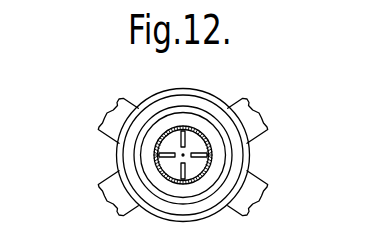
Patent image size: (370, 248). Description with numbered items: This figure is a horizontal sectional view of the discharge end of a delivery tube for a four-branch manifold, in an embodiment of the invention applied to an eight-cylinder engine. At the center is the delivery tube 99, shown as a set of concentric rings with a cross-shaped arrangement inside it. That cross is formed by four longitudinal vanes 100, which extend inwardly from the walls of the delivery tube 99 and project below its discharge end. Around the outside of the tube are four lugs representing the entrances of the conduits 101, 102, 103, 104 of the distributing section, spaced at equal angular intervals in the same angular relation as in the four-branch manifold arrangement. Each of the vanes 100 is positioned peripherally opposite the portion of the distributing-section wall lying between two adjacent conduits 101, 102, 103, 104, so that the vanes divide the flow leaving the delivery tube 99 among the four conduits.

The delivery tube 99 is at (196, 128).
The longitudinal vanes 100 is at (176, 130).
The conduit 101 is at (252, 117).
The conduit 102 is at (255, 185).
The conduit 103 is at (103, 175).
The conduit 104 is at (123, 99).